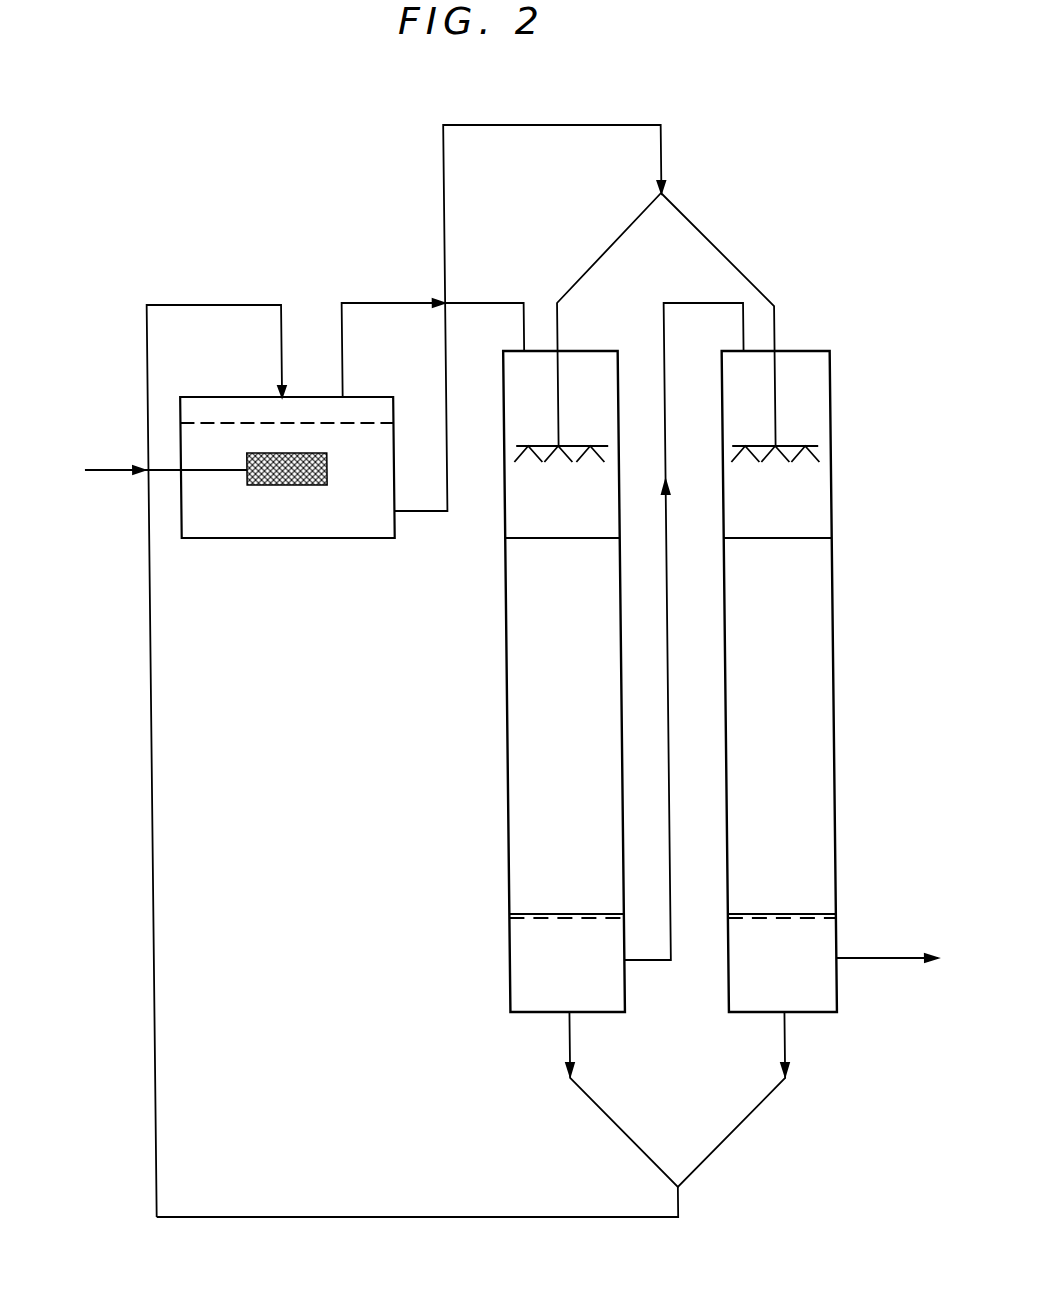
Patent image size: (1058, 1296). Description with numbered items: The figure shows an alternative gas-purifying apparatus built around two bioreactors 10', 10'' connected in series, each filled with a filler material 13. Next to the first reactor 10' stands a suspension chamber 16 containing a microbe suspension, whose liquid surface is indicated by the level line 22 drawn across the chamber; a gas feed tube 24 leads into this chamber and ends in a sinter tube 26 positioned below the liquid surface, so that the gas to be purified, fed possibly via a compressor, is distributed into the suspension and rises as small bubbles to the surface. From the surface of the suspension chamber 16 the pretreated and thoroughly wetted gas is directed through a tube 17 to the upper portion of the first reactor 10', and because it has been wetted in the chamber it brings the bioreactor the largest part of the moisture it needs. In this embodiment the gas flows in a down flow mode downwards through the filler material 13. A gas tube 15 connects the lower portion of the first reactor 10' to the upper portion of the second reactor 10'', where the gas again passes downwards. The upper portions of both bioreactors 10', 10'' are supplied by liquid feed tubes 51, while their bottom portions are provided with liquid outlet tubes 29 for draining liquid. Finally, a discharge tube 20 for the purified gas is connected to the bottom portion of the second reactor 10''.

The suspension chamber 16 is at (366, 520).
The liquid level 22 is at (231, 423).
The sinter tube 26 is at (297, 487).
The gas feed tube 24 is at (121, 467).
The tube 17 is at (376, 301).
The liquid feed tubes 51 is at (670, 196).
The first bioreactor 10' is at (529, 681).
The second bioreactor 10'' is at (817, 681).
The filler material 13 is at (816, 686).
The gas tube 15 is at (650, 965).
The discharge tube 20 is at (864, 955).
The liquid outlet tubes 29 is at (566, 1048).